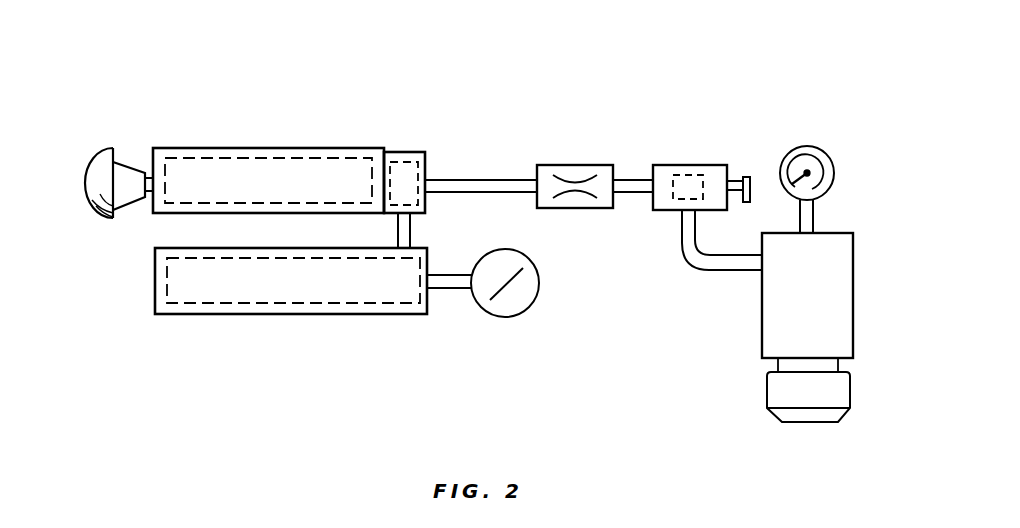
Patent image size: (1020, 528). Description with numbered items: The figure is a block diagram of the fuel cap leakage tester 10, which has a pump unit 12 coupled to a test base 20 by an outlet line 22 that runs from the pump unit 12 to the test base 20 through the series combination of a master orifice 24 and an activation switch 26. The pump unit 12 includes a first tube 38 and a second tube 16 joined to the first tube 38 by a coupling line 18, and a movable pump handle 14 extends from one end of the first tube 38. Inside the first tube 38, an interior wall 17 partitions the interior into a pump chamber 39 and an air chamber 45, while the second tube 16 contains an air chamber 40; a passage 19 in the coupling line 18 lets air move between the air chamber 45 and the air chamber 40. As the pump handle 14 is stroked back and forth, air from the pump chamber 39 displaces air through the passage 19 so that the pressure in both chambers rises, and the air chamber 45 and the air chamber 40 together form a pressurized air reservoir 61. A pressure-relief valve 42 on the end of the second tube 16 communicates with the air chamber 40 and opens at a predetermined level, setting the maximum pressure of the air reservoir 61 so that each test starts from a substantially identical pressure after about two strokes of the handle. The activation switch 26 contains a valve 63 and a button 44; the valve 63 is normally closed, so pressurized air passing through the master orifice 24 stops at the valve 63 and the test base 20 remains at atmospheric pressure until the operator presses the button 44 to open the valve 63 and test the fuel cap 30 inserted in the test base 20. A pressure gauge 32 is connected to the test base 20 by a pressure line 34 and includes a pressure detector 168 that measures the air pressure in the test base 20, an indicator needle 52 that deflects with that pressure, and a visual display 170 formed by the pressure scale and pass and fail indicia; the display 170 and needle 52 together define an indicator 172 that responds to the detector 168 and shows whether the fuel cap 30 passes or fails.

The fuel cap leakage tester 10 is at (222, 80).
The pump unit 12 is at (333, 125).
The pump handle 14 is at (131, 166).
The second tube 16 is at (280, 314).
The interior wall 17 is at (390, 160).
The coupling line 18 is at (405, 236).
The passage 19 is at (398, 232).
The test base 20 is at (837, 337).
The outlet line 22 is at (492, 191).
The master orifice 24 is at (577, 165).
The activation switch 26 is at (710, 165).
The fuel cap 30 is at (756, 407).
The pressure gauge 32 is at (834, 174).
The pressure line 34 is at (808, 217).
The first tube 38 is at (275, 149).
The pump chamber 39 is at (338, 176).
The air chamber 40 is at (275, 283).
The pressure-relief valve 42 is at (520, 307).
The button 44 is at (748, 177).
The air chamber 45 is at (410, 176).
The indicator needle 52 is at (797, 170).
The pressurized air reservoir 61 is at (350, 284).
The valve 63 is at (684, 175).
The pressure detector 168 is at (811, 193).
The visual display 170 is at (823, 181).
The indicator 172 is at (834, 142).